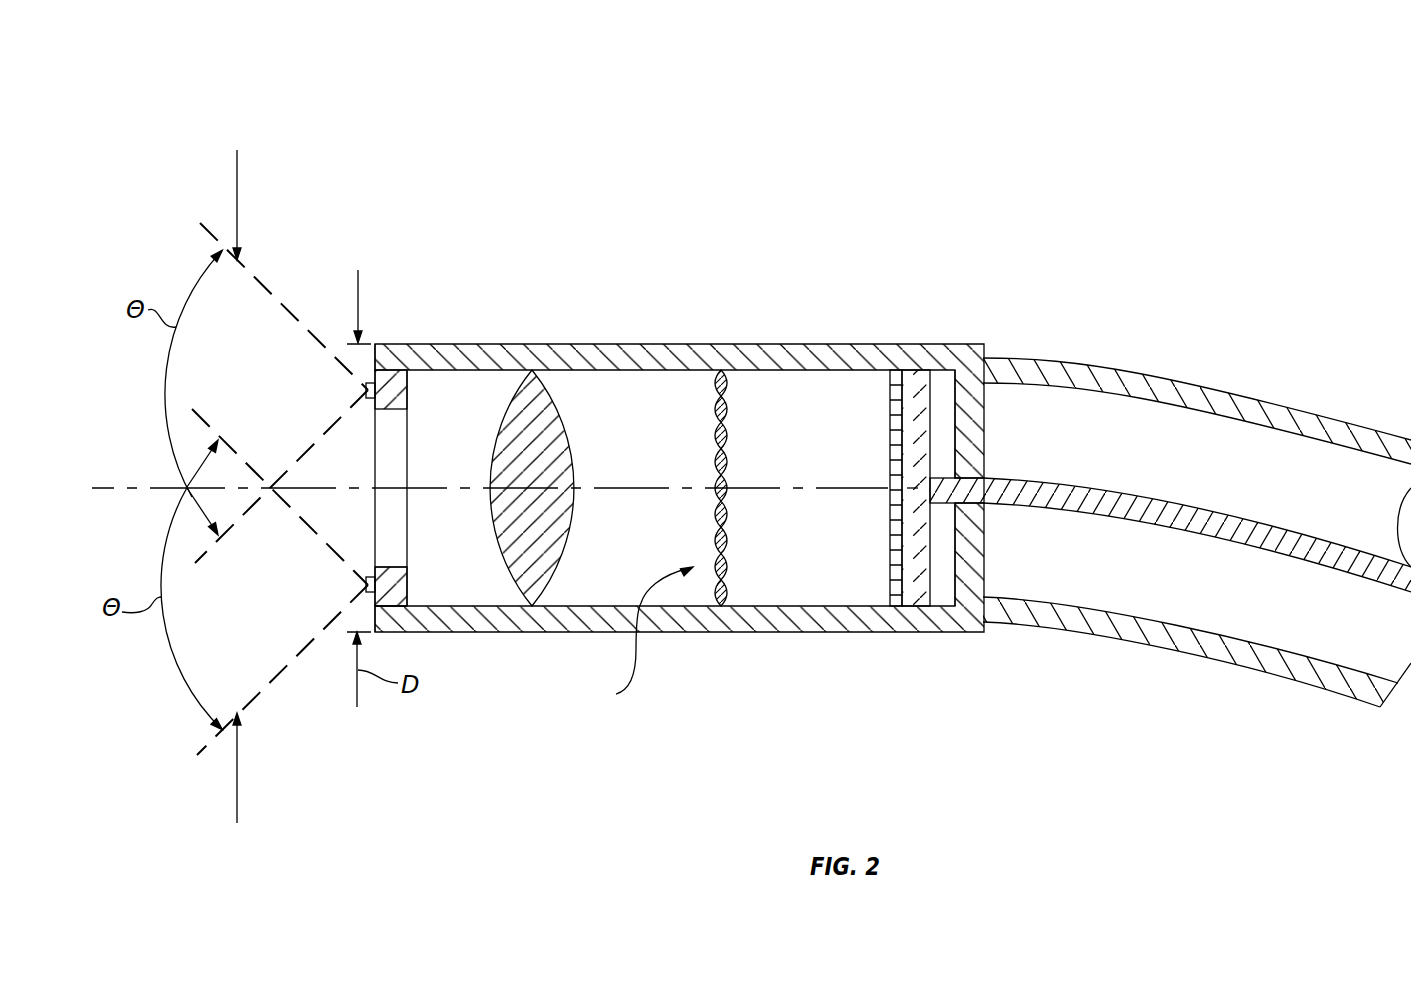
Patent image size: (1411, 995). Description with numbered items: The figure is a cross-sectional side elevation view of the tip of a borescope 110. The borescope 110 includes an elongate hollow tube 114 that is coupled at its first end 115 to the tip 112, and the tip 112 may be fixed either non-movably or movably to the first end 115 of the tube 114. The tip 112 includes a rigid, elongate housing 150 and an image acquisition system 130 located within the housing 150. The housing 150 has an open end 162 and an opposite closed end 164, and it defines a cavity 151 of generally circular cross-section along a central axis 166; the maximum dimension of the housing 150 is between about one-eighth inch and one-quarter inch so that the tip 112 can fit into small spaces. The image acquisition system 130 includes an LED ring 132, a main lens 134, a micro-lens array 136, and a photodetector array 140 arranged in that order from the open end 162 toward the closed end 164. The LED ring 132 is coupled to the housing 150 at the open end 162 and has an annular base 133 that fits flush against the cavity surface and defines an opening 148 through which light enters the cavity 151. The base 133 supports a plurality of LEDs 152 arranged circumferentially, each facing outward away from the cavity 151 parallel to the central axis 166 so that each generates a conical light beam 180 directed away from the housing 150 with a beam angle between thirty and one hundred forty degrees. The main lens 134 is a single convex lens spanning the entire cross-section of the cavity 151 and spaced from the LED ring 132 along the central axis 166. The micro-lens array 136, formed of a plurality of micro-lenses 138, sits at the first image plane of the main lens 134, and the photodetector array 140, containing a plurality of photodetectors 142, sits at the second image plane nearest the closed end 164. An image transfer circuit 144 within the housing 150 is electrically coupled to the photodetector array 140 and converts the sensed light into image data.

The borescope 110 is at (1170, 507).
The tip 112 is at (542, 344).
The tube 114 is at (1330, 417).
The first end of the tube 115 is at (1038, 371).
The image acquisition system 130 is at (345, 440).
The LED ring 132 is at (412, 580).
The base 133 is at (393, 592).
The main lens 134 is at (505, 417).
The micro-lens array 136 is at (635, 638).
The micro-lenses 138 is at (728, 558).
The photodetector array 140 is at (889, 499).
The photodetectors 142 is at (890, 573).
The image transfer circuit 144 is at (913, 385).
The opening 148 is at (395, 567).
The housing 150 is at (403, 356).
The cavity 151 is at (827, 414).
The LEDs 152 is at (366, 385).
The open end 162 is at (375, 372).
The closed end 164 is at (987, 553).
The central axis 166 is at (600, 490).
The light beam 180 is at (236, 490).